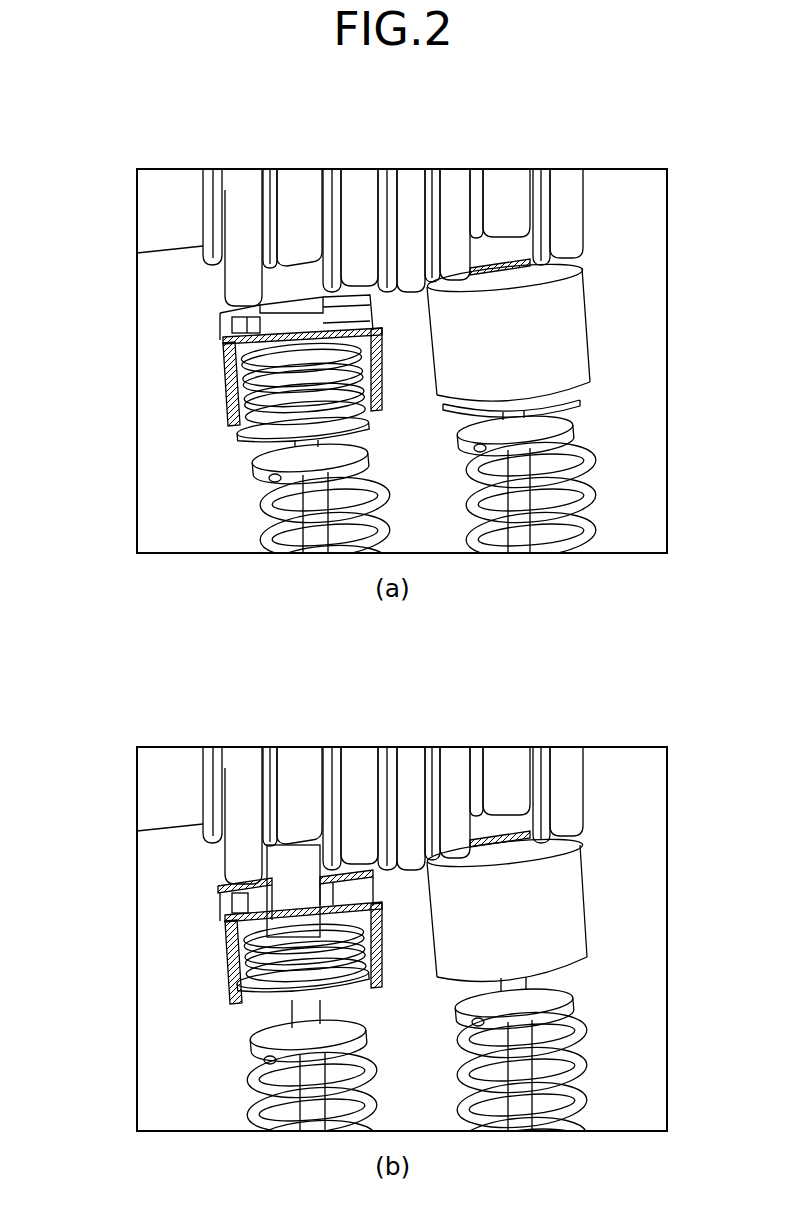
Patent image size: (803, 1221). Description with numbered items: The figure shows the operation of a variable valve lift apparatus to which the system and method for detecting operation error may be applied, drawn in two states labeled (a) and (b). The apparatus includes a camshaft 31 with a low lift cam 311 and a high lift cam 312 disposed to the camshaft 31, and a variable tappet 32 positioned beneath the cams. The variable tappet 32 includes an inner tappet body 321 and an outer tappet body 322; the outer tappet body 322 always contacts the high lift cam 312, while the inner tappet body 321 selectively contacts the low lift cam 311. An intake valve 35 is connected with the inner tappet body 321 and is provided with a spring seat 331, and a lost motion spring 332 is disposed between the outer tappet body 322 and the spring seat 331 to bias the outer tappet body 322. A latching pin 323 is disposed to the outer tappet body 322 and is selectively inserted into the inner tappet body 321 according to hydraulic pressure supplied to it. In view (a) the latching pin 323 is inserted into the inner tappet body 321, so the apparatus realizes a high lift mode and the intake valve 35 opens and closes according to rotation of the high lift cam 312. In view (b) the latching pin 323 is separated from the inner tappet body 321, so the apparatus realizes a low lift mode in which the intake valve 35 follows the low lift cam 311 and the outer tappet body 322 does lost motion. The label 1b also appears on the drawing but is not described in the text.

The camshaft 31 is at (168, 218).
The low lift cam 311 is at (295, 226).
The high lift cam 312 is at (243, 177).
The variable tappet 32 is at (216, 352).
The inner tappet body 321 is at (305, 308).
The outer tappet body 322 is at (235, 320).
The latching pin 323 is at (235, 297).
The cup housing 1b is at (227, 383).
The spring seat 331 is at (242, 433).
The lost motion spring 332 is at (238, 406).
The intake valve 35 is at (278, 487).